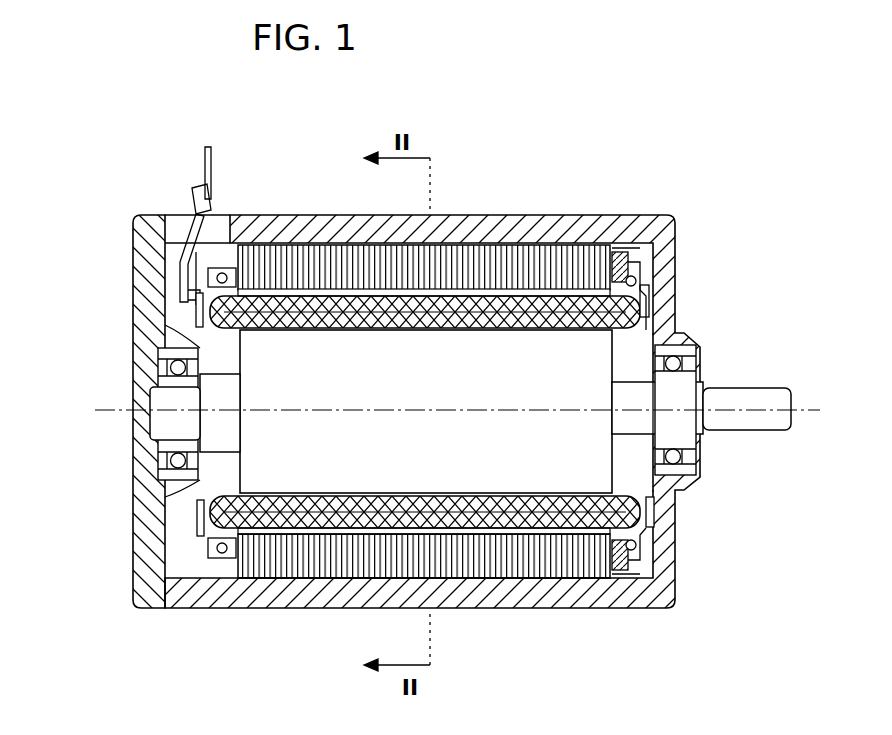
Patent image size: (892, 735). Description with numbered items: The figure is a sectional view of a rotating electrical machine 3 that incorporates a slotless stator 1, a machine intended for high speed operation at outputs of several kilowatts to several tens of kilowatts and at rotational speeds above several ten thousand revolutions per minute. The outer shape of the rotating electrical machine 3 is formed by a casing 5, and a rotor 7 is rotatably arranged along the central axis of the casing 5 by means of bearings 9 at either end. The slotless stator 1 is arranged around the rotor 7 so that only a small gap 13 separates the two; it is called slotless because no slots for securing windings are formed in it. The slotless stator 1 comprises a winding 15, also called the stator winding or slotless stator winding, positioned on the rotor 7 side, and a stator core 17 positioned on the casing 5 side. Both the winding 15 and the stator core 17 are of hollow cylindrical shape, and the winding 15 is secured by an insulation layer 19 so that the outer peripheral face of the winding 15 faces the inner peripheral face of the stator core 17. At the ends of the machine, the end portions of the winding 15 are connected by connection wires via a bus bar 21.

The slotless stator 1 is at (508, 238).
The rotating electrical machine 3 is at (314, 198).
The casing 5 is at (582, 213).
The rotor 7 is at (678, 505).
The bearings 9 is at (690, 333).
The gap 13 is at (200, 490).
The winding 15 is at (273, 534).
The stator core 17 is at (457, 578).
The insulation layer 19 is at (527, 535).
The bus bar 21 is at (655, 258).